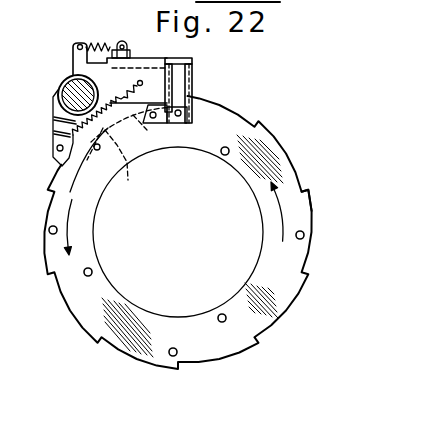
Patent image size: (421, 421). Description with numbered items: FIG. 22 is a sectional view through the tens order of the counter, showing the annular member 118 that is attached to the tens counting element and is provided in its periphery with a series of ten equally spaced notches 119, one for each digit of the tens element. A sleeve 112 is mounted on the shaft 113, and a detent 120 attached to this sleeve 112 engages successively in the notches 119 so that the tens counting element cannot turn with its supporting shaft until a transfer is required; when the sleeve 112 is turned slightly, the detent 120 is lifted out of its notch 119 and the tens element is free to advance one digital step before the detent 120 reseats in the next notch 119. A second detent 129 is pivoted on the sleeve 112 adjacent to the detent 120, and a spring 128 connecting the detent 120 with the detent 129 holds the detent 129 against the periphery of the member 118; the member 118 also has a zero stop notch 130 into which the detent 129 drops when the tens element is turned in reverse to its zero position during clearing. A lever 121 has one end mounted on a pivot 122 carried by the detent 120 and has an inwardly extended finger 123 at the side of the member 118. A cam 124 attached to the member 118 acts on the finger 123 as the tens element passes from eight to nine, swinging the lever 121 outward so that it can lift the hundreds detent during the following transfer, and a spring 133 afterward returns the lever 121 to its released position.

The sleeve 112 is at (66, 95).
The shaft 113 is at (73, 90).
The annular member 118 is at (213, 110).
The notches 119 is at (303, 193).
The detent 120 is at (135, 124).
The lever 121 is at (152, 61).
The pivot 122 is at (130, 54).
The finger 123 is at (193, 89).
The cam 124 is at (128, 165).
The spring 128 is at (84, 158).
The detent 129 is at (56, 134).
The zero stop notch 130 is at (69, 218).
The spring 133 is at (99, 43).